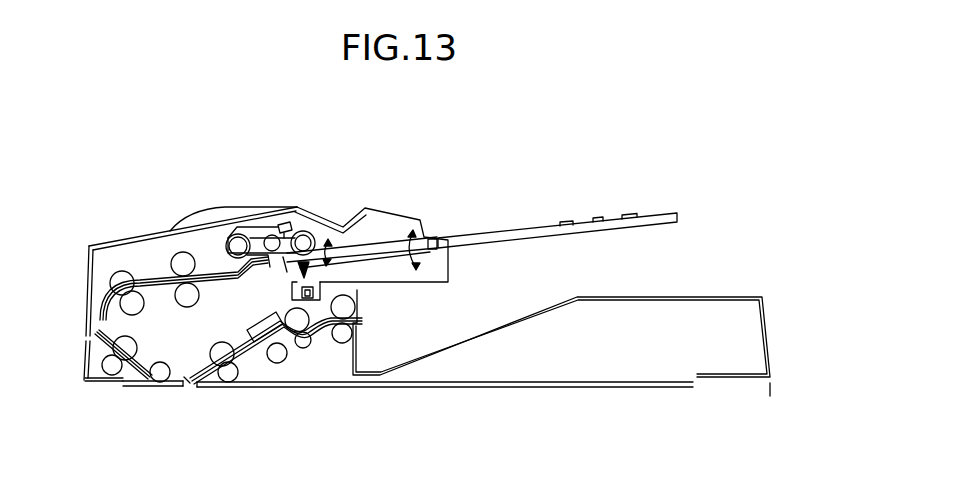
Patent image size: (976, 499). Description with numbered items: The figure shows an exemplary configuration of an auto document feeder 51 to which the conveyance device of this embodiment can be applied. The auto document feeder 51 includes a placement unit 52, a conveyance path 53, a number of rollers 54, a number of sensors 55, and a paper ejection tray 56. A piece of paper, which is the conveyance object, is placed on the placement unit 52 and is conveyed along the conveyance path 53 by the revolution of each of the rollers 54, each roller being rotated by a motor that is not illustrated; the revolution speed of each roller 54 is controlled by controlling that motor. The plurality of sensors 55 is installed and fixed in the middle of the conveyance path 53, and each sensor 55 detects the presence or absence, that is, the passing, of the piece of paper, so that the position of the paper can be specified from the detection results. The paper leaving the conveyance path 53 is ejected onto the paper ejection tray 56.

The auto document feeder 51 is at (432, 150).
The placement unit 52 is at (497, 233).
The conveyance path 53 is at (148, 277).
The rollers 54 is at (113, 272).
The sensors 55 is at (158, 272).
The paper ejection tray 56 is at (470, 335).